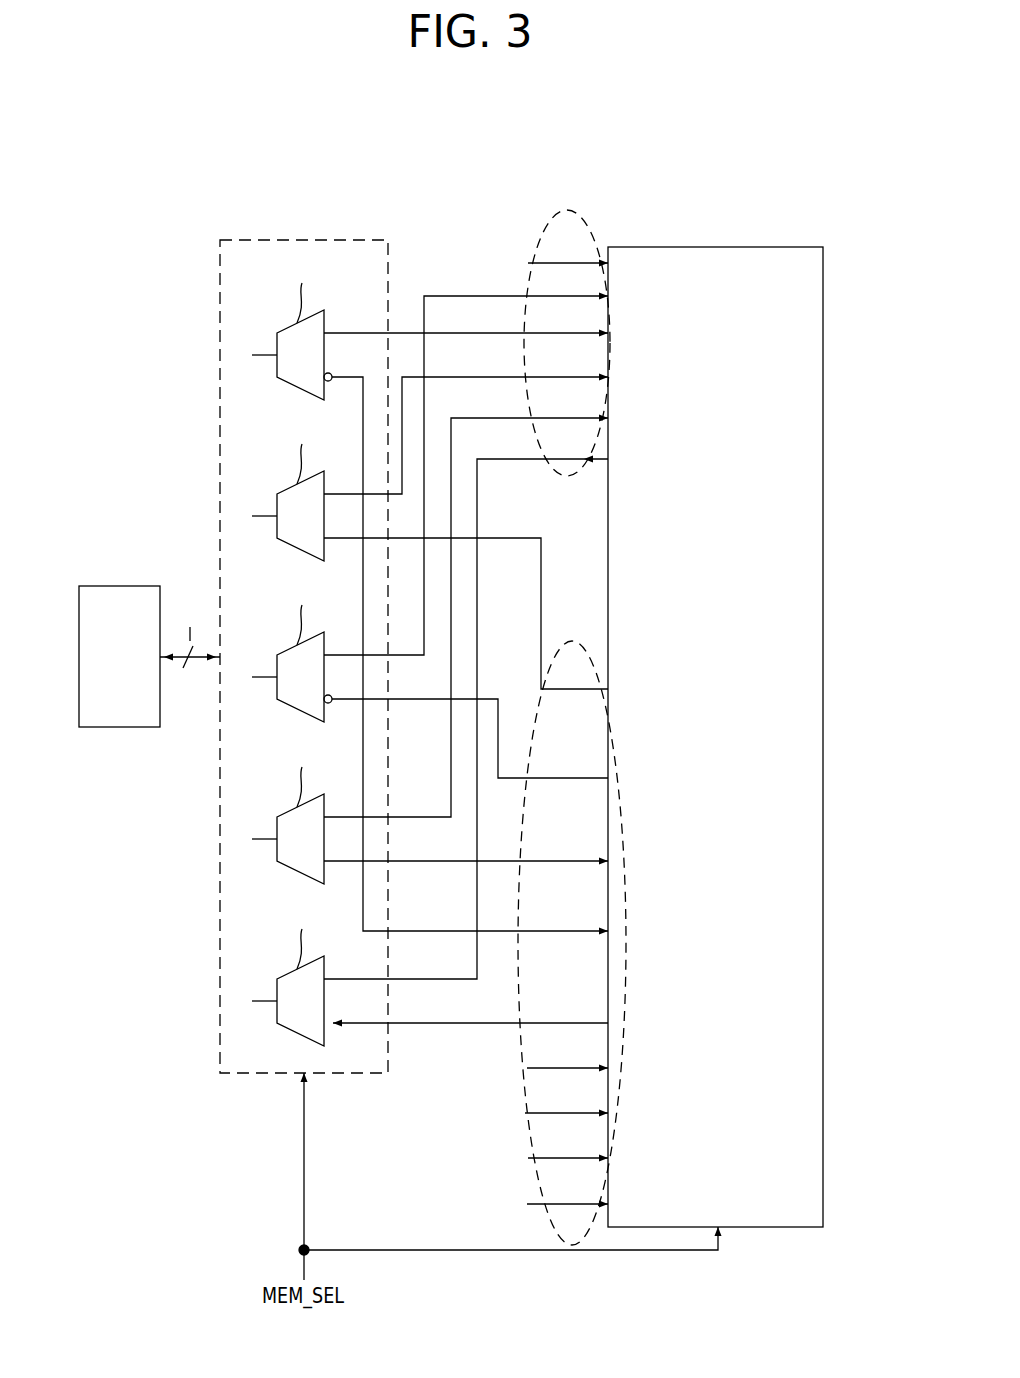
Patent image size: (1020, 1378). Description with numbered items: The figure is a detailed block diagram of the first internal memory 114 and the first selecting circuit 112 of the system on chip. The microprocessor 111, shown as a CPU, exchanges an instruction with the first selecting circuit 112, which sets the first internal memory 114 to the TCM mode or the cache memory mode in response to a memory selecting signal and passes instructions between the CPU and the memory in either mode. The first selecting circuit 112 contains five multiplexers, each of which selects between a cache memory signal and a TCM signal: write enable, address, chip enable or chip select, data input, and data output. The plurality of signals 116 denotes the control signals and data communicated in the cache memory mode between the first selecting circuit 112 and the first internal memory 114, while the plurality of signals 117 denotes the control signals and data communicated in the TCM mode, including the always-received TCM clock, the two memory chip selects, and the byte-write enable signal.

The microprocessor 111 is at (118, 586).
The first selecting circuit 112 is at (302, 240).
The first internal memory 114 is at (713, 247).
The plurality of signals 116 is at (565, 210).
The plurality of signals 117 is at (568, 641).